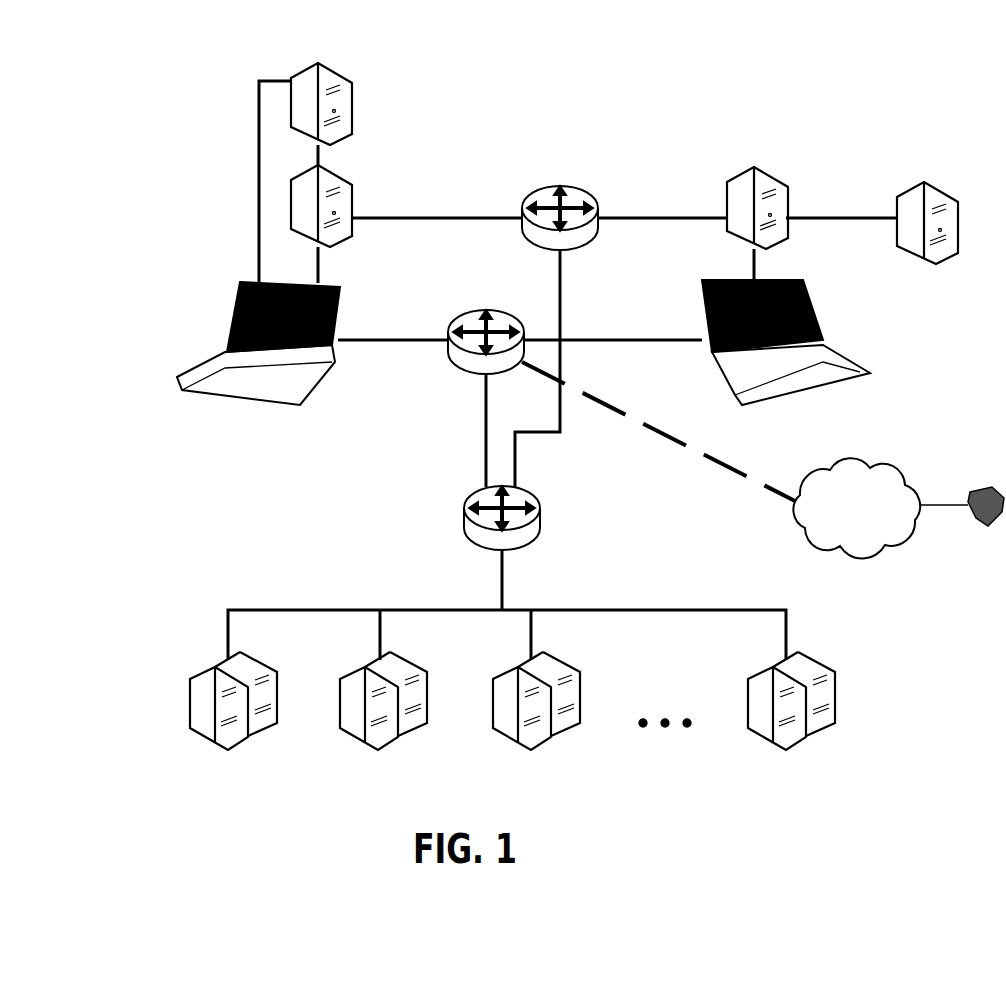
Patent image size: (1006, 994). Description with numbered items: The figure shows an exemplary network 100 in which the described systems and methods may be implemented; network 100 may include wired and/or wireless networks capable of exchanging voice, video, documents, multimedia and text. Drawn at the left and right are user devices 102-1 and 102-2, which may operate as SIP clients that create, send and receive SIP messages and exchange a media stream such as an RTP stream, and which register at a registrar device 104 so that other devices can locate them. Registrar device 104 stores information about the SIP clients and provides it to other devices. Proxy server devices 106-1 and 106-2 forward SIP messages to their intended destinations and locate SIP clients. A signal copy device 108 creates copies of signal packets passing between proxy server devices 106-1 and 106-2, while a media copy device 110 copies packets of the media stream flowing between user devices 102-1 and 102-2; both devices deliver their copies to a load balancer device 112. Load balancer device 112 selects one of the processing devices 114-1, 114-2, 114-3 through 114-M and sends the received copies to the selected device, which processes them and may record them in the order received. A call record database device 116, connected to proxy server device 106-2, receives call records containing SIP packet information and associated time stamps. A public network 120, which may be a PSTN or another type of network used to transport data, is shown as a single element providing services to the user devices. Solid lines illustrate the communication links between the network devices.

The network 100 is at (146, 52).
The user device 102-1 is at (225, 278).
The user device 102-2 is at (793, 283).
The registrar device 104 is at (328, 92).
The proxy server device 106-1 is at (350, 187).
The proxy server device 106-2 is at (750, 165).
The signal copy device 108 is at (560, 183).
The media copy device 110 is at (485, 305).
The load balancer device 112 is at (465, 513).
The processing device 114-1 is at (190, 695).
The processing device 114-2 is at (340, 697).
The processing device 114-3 is at (493, 690).
The processing device 114-M is at (748, 693).
The call record database device 116 is at (920, 183).
The public network 120 is at (847, 526).